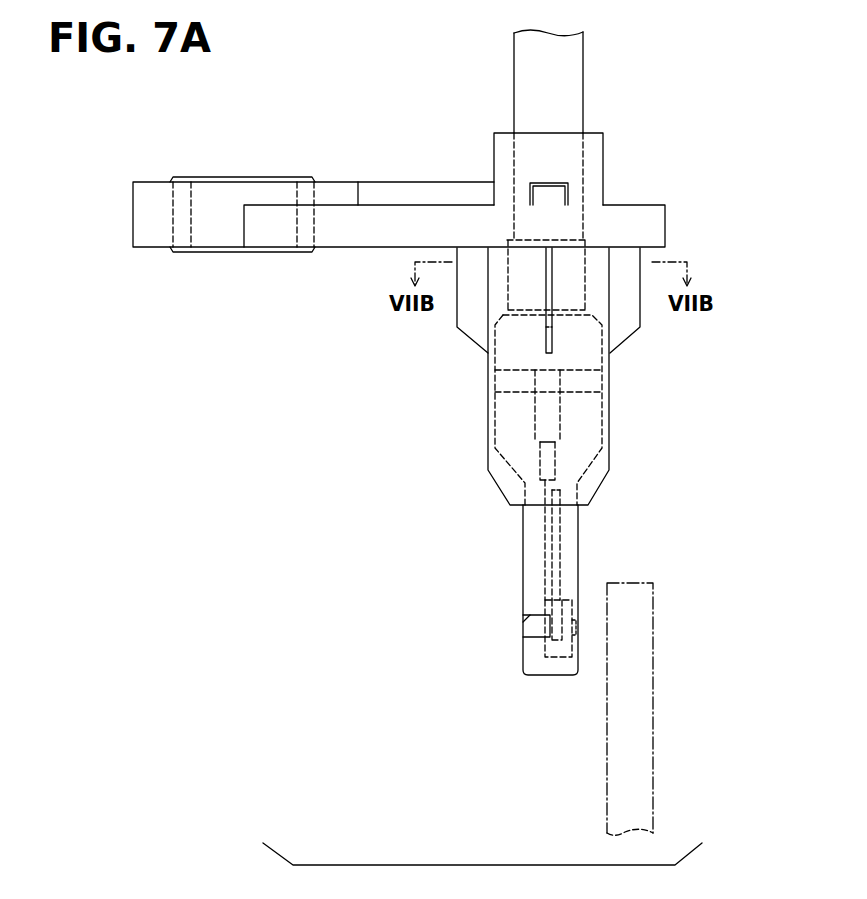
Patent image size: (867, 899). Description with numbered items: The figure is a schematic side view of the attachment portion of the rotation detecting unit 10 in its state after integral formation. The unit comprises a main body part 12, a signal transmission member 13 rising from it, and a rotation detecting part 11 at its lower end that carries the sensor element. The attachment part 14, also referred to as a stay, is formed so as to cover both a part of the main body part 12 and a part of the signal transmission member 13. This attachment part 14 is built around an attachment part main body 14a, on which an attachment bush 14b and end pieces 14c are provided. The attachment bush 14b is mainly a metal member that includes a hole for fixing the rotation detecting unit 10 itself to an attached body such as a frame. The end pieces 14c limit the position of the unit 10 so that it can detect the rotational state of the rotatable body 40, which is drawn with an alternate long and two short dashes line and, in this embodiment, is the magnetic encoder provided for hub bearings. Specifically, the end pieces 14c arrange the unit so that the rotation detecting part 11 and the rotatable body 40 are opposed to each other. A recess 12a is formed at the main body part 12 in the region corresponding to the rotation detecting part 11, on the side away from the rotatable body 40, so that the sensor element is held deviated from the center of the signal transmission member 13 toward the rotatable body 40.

The rotation detecting unit 10 is at (437, 103).
The rotation detecting part 11 is at (546, 628).
The main body part 12 is at (603, 426).
The recess 12a is at (523, 623).
The signal transmission member 13 is at (562, 88).
The attachment part 14 is at (397, 168).
The attachment part main body 14a is at (337, 233).
The attachment bush 14b is at (182, 237).
The end pieces 14c is at (615, 335).
The rotatable body 40 is at (653, 646).